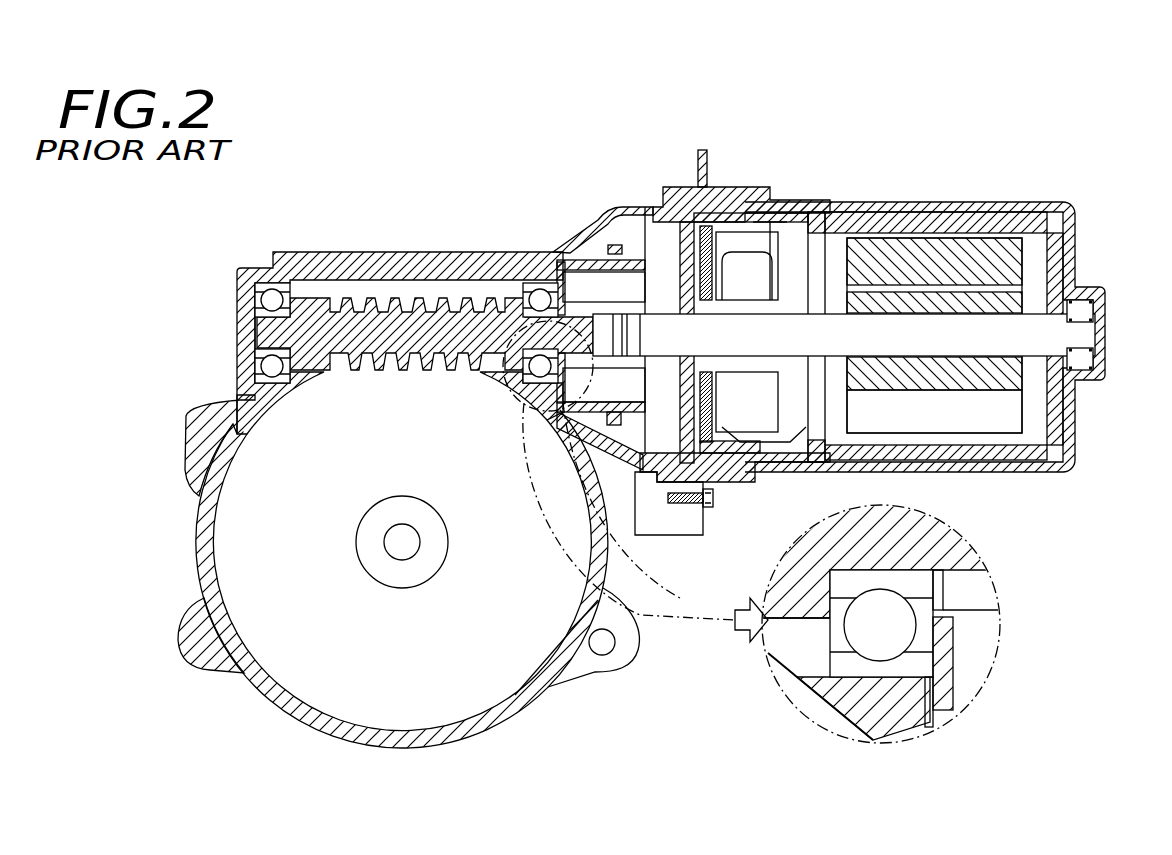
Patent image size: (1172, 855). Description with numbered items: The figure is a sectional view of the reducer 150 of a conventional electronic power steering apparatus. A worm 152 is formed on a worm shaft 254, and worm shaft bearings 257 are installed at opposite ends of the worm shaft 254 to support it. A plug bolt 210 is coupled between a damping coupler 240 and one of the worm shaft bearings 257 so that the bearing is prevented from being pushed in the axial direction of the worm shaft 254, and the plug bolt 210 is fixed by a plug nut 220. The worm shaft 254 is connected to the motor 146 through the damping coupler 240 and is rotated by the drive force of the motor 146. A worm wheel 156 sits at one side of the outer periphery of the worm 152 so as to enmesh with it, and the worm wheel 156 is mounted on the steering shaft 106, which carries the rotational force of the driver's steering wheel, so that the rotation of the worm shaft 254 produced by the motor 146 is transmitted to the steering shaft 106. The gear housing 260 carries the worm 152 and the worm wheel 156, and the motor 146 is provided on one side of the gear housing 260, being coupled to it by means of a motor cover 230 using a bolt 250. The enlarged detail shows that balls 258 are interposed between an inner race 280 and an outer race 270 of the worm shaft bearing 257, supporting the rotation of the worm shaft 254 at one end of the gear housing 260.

The reducer 150 is at (683, 107).
The motor 146 is at (877, 205).
The motor cover 230 is at (728, 195).
The plug nut 220 is at (613, 240).
The plug bolt 210 is at (595, 241).
The worm shaft bearing 257 is at (268, 289).
The worm 152 is at (342, 299).
The gear housing 260 is at (398, 256).
The worm shaft 254 is at (262, 333).
The bolt 250 is at (717, 498).
The damping coupler 240 is at (628, 388).
The steering shaft 106 is at (402, 545).
The worm wheel 156 is at (485, 683).
The inner race 280 is at (921, 585).
The ball 258 is at (902, 630).
The outer race 270 is at (922, 670).